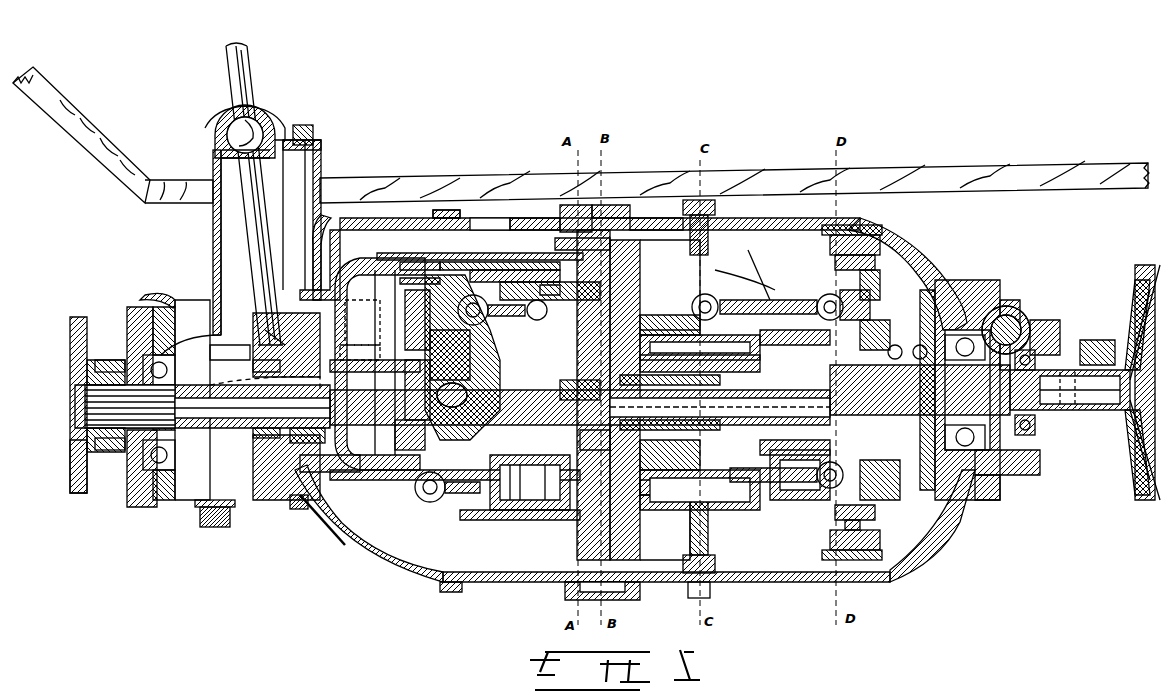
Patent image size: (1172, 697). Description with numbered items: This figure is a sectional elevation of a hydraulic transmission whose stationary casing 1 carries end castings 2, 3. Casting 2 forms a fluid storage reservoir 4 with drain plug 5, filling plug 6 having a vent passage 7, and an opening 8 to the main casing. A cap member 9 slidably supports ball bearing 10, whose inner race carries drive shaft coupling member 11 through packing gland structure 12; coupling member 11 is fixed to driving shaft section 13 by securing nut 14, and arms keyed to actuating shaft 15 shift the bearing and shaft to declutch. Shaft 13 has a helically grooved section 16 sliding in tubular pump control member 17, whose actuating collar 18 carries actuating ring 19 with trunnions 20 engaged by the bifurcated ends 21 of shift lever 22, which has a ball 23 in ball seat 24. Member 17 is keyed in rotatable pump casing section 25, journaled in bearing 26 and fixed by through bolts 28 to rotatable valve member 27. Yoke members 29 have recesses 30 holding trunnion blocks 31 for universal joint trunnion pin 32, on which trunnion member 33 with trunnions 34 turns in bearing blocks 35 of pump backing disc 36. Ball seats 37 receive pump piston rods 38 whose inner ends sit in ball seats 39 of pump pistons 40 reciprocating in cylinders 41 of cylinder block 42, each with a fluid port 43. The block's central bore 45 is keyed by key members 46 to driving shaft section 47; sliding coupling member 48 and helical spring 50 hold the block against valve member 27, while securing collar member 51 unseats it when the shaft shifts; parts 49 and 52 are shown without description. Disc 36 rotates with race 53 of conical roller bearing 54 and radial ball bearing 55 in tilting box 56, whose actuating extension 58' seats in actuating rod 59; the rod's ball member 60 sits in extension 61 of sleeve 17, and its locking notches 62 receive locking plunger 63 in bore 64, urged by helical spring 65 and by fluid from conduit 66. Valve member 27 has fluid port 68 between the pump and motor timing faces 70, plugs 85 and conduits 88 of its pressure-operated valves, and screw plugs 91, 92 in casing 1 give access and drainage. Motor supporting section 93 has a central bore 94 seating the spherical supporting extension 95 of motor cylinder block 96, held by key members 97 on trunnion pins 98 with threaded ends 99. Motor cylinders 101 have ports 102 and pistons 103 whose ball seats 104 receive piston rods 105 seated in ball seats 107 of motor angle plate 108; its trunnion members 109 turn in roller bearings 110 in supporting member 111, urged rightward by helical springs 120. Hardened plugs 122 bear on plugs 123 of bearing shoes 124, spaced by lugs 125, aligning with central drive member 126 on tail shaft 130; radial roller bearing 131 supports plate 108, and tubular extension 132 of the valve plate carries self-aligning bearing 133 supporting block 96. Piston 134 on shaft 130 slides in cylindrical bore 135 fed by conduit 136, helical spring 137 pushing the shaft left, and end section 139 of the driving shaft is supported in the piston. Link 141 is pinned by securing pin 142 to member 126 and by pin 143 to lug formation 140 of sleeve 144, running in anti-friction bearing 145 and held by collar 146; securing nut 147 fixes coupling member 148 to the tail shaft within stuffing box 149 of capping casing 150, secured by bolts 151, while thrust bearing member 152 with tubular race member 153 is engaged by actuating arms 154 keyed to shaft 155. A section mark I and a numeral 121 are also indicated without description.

The stationary casing 1 is at (521, 582).
The end casting 2 is at (373, 205).
The end casting 3 is at (910, 245).
The fluid storage reservoir 4 is at (211, 270).
The drain plug 5 is at (199, 522).
The filling plug 6 is at (316, 142).
The passage 7 is at (302, 124).
The opening 8 is at (314, 212).
The cap member 9 is at (126, 318).
The ball bearing 10 is at (176, 447).
The drive shaft coupling member 11 is at (70, 445).
The packing gland structure 12 is at (110, 360).
The driving shaft section 13 is at (215, 395).
The securing nut 14 is at (76, 405).
The actuating shaft 15 is at (165, 300).
The helically grooved section 16 is at (314, 471).
The tubular pump control member 17 is at (290, 455).
The actuating collar 18 is at (252, 440).
The actuating ring 19 is at (256, 362).
The trunnions 20 is at (262, 402).
The bifurcated ends 21 is at (263, 312).
The shift lever 22 is at (266, 273).
The ball 23 is at (247, 120).
The ball seat 24 is at (272, 153).
The pump casing section 25 is at (483, 522).
The anti-friction bearing 26 is at (296, 505).
The rotatable valve member 27 is at (610, 202).
The through bolts 28 is at (390, 262).
The yoke members 29 is at (447, 478).
The trunnion block supporting recesses 30 is at (530, 488).
The trunnion blocks 31 is at (375, 363).
The universal joint trunnion pin 32 is at (360, 342).
The universal joint trunnion member 33 is at (462, 392).
The trunnions 34 is at (365, 322).
The bearing blocks 35 is at (436, 262).
The pump ring or backing disc 36 is at (462, 252).
The ball seats 37 is at (462, 214).
The pump piston rods 38 is at (545, 282).
The ball seats 39 is at (551, 286).
The pump pistons 40 is at (582, 244).
The cylinders 41 is at (569, 394).
The cylinder block 42 is at (670, 324).
The fluid port 43 is at (646, 248).
The central bore 45 is at (670, 462).
The securing key members 46 is at (505, 315).
The driving shaft section 47 is at (518, 439).
The sliding coupling member 48 is at (411, 435).
The pin 49 is at (548, 387).
The helical spring 50 is at (580, 390).
The securing collar member 51 is at (698, 356).
The pin 52 is at (563, 433).
The race 53 is at (450, 262).
The conical roller bearing 54 is at (404, 292).
The radial ball bearing 55 is at (495, 266).
The pump angle or tilting box 56 is at (330, 530).
The actuating extension 58' is at (494, 215).
The actuating rod 59 is at (535, 216).
The ball member 60 is at (376, 348).
The recessed extension 61 is at (344, 337).
The V-shaped locking notches 62 is at (688, 283).
The locking plunger 63 is at (656, 303).
The bore 64 is at (509, 392).
The helical spring 65 is at (373, 542).
The conduit 66 is at (678, 325).
The fluid port 68 is at (480, 514).
The timing faces 70 is at (576, 514).
The plugs 85 is at (661, 527).
The conduits 88 is at (661, 505).
The screw plug 91 is at (632, 205).
The screw plug 92 is at (635, 603).
The motor supporting section 93 is at (759, 263).
The central bore 94 is at (745, 275).
The supporting extension 95 is at (770, 270).
The motor cylinder block 96 is at (785, 285).
The key members 97 is at (712, 510).
The trunnion pins 98 is at (738, 543).
The threaded ends 99 is at (716, 210).
The motor cylinders 101 is at (795, 314).
The ports 102 is at (700, 422).
The piston 103 is at (780, 400).
The ball seats 104 is at (802, 270).
The piston rods 105 is at (811, 381).
The ball seats 107 is at (888, 391).
The motor angle plate 108 is at (865, 260).
The trunnion members 109 is at (860, 225).
The roller bearings 110 is at (827, 378).
The supporting member 111 is at (820, 392).
The helical springs 120 is at (900, 444).
The ring 121 is at (910, 457).
The hardened metallic plugs 122 is at (836, 409).
The hardened metallic plugs 123 is at (920, 469).
The bearing shoes 124 is at (895, 299).
The spacing lugs 125 is at (900, 329).
The central drive member 126 is at (917, 336).
The tail shaft 130 is at (1005, 297).
The radial roller bearing 131 is at (580, 402).
The tubular extension 132 is at (864, 419).
The self-aligning bearing 133 is at (684, 439).
The piston 134 is at (560, 497).
The cylindrical bore 135 is at (705, 457).
The conduit 136 is at (729, 378).
The helical spring 137 is at (697, 390).
The end section 139 is at (670, 384).
The apertured lug formation 140 is at (930, 289).
The link 141 is at (910, 419).
The securing pin 142 is at (975, 392).
The pin 143 is at (1030, 396).
The sleeve 144 is at (932, 377).
The anti-friction bearing 145 is at (963, 280).
The collar 146 is at (1028, 315).
The securing nut 147 is at (1135, 318).
The coupling member 148 is at (1135, 280).
The sealing or stuffing box 149 is at (1095, 340).
The capping casing 150 is at (1012, 466).
The bolts 151 is at (1000, 495).
The anti-friction thrust bearing member 152 is at (1040, 455).
The tubular race member 153 is at (1051, 330).
The actuating arms 154 is at (980, 390).
The shaft 155 is at (1020, 321).
The section line I is at (908, 537).